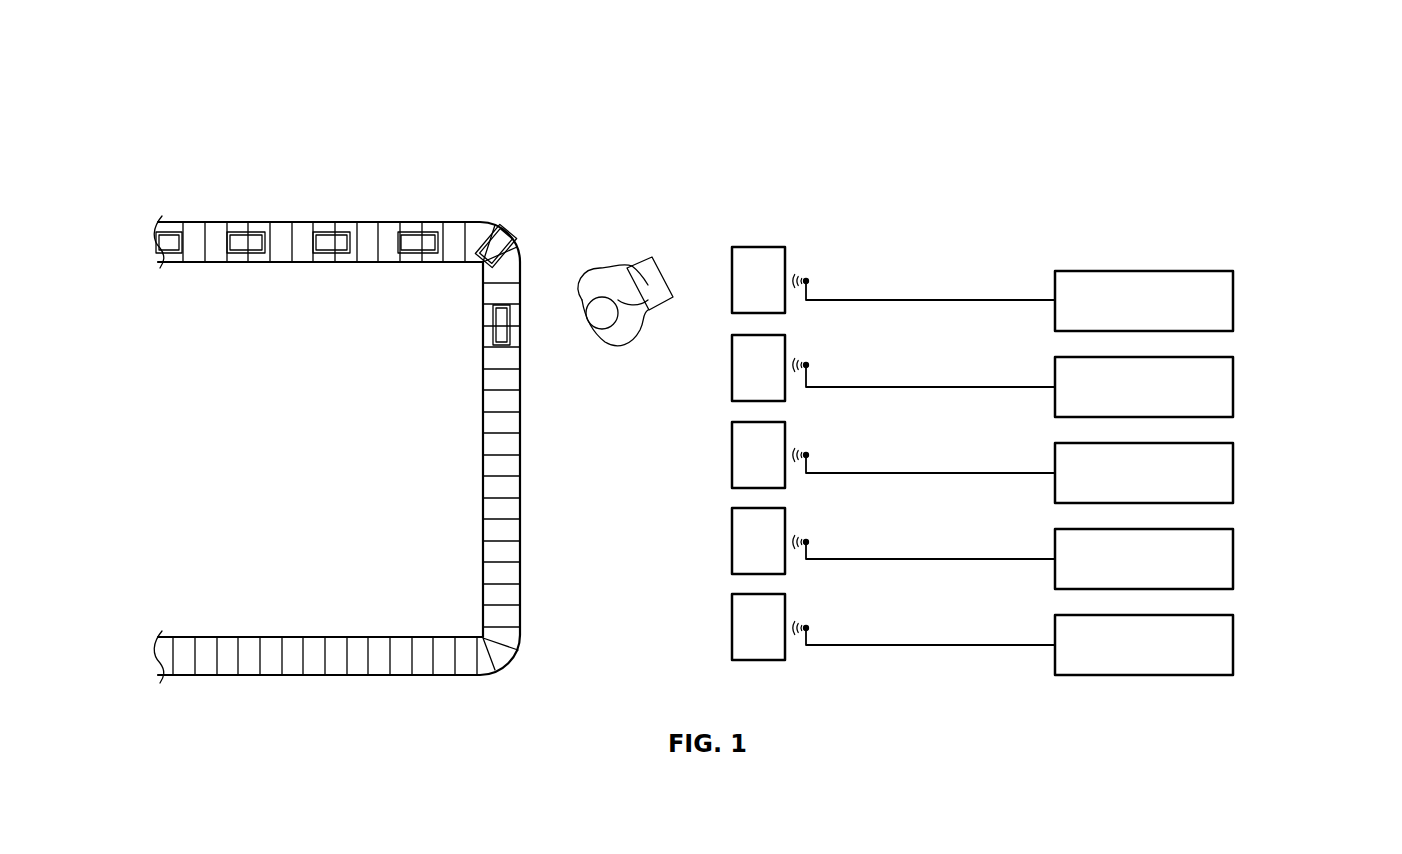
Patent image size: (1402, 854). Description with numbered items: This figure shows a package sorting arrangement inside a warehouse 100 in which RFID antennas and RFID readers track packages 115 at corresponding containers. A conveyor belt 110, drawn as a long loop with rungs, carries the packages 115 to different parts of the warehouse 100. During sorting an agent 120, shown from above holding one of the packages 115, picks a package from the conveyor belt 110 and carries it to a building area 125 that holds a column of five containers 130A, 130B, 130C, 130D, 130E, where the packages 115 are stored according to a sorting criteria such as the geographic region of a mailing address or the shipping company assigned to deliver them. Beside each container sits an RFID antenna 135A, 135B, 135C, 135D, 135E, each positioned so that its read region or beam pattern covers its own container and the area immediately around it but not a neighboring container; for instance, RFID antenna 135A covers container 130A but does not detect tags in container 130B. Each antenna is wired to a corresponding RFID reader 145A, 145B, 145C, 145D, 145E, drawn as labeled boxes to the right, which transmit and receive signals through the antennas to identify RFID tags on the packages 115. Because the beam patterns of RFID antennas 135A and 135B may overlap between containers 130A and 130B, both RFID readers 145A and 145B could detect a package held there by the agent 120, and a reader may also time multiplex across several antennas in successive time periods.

The warehouse 100 is at (1126, 94).
The conveyor belt 110 is at (342, 262).
The packages 115 is at (683, 262).
The agent 120 is at (612, 345).
The building area 125 is at (894, 152).
The container 130A is at (773, 247).
The container 130B is at (732, 355).
The container 130C is at (732, 455).
The container 130D is at (732, 542).
The container 130E is at (732, 628).
The RFID antenna 135A is at (812, 291).
The RFID antenna 135B is at (830, 351).
The RFID antenna 135C is at (809, 457).
The RFID antenna 135D is at (809, 544).
The RFID antenna 135E is at (818, 614).
The RFID reader 145A is at (1233, 300).
The RFID reader 145B is at (1233, 386).
The RFID reader 145C is at (1233, 472).
The RFID reader 145D is at (1233, 558).
The RFID reader 145E is at (1233, 644).